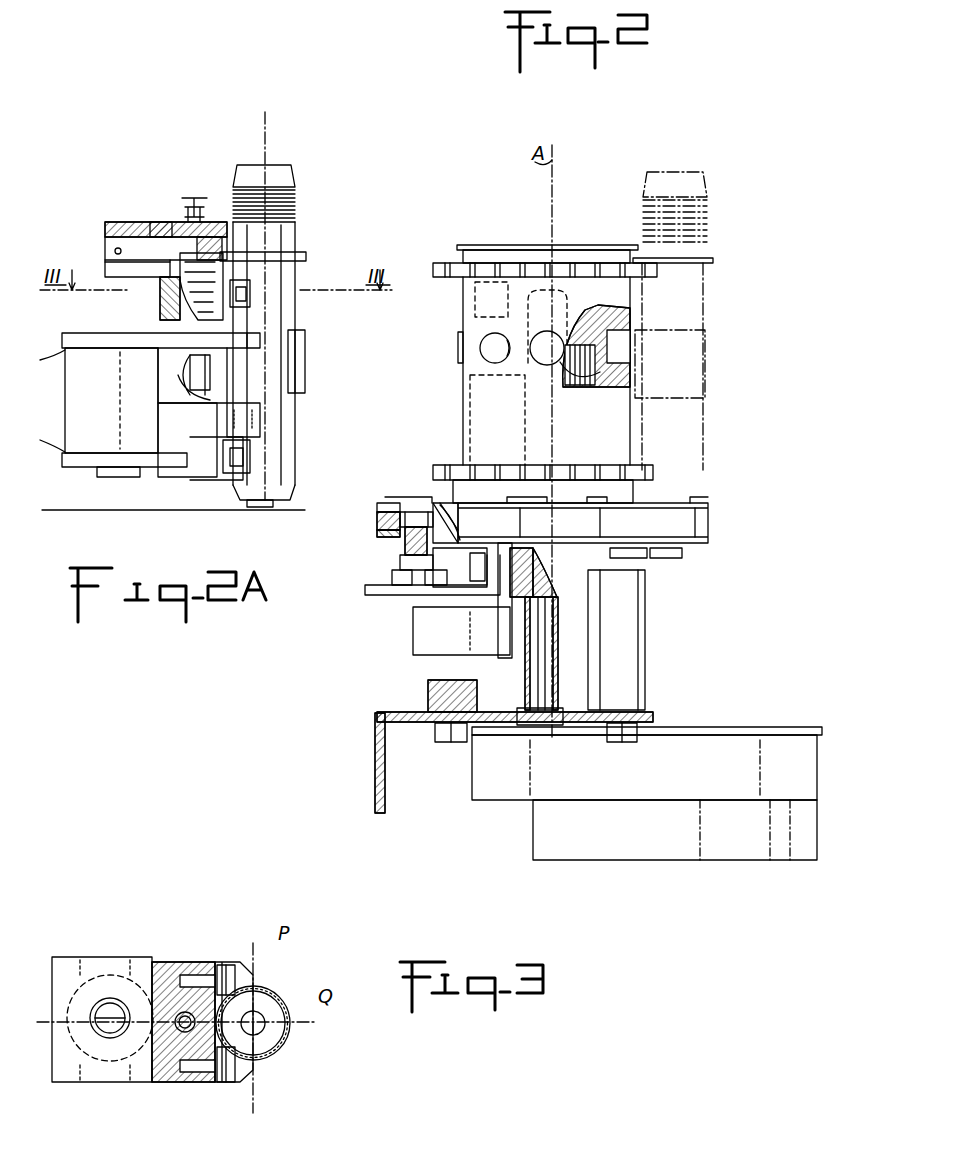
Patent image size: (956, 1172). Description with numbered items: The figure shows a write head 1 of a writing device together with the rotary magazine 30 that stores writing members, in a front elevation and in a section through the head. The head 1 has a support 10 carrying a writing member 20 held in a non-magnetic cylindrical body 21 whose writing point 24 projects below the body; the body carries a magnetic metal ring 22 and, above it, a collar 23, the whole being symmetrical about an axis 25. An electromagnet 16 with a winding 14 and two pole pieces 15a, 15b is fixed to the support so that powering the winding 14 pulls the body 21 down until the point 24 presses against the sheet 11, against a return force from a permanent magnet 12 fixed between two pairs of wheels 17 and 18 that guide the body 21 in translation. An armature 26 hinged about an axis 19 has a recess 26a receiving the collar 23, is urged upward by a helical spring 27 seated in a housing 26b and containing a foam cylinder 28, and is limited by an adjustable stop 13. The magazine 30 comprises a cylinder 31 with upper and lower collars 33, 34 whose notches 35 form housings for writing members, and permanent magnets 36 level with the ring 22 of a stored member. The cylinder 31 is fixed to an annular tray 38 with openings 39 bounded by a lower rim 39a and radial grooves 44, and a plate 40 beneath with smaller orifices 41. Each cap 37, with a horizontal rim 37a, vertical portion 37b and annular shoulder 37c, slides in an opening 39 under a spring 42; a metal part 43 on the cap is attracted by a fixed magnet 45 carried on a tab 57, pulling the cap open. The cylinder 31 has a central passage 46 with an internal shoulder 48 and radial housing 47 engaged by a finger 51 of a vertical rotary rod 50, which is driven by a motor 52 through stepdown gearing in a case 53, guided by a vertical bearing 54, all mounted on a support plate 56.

In FIG. 2A, the write head 1 is at (215, 139).
In FIG. 2A, the support 10 is at (116, 222).
In FIG. 3, the support 10 is at (172, 962).
In FIG. 2A, the sheet 11 is at (75, 510).
In FIG. 2A, the permanent magnet 12 is at (210, 374).
In FIG. 3, the permanent magnet 12 is at (185, 1082).
In FIG. 2A, the adjustable stop 13 is at (190, 200).
In FIG. 2A, the winding 14 is at (72, 415).
In FIG. 2A, the pole piece 15a is at (262, 343).
In FIG. 3, the pole piece 15a is at (243, 965).
In FIG. 2A, the pole piece 15b is at (258, 425).
In FIG. 2A, the electromagnet 16 is at (135, 480).
In FIG. 3, the electromagnet 16 is at (114, 1098).
In FIG. 2A, the wheels 17 is at (250, 296).
In FIG. 3, the wheels 17 is at (226, 965).
In FIG. 2A, the wheels 18 is at (230, 466).
In FIG. 2A, the axis 19 is at (115, 250).
In FIG. 2A, the writing member 20 is at (243, 490).
In FIG. 2A, the cylindrical body 21 is at (290, 284).
In FIG. 3, the cylindrical body 21 is at (288, 1047).
In FIG. 2A, the metal ring 22 is at (290, 380).
In FIG. 3, the metal ring 22 is at (283, 1000).
In FIG. 2A, the collar 23 is at (298, 253).
In FIG. 2A, the writing point 24 is at (258, 508).
In FIG. 2A, the axis 25 is at (270, 140).
In FIG. 2A, the armature 26 is at (105, 263).
In FIG. 2A, the recess 26a is at (205, 242).
In FIG. 2A, the housing 26b is at (165, 224).
In FIG. 2A, the spring 27 is at (163, 280).
In FIG. 3, the spring 27 is at (150, 1003).
In FIG. 2A, the cylinder 28 is at (203, 308).
In FIG. 3, the cylinder 28 is at (172, 1027).
In FIG. 2, the rotary magazine 30 is at (485, 214).
In FIG. 2, the support part 31 is at (566, 250).
In FIG. 2, the upper collar 33 is at (650, 276).
In FIG. 2, the lower collar 34 is at (648, 470).
In FIG. 2, the notches 35 is at (537, 265).
In FIG. 2, the permanent magnets 36 is at (617, 352).
In FIG. 2, the cap 37 is at (405, 560).
In FIG. 2, the horizontal rim 37a is at (428, 508).
In FIG. 2, the vertical portion 37b is at (377, 519).
In FIG. 2, the annular shoulder 37c is at (380, 538).
In FIG. 2, the annular tray 38 is at (710, 526).
In FIG. 2, the openings 39 is at (460, 514).
In FIG. 2, the lower rim 39a is at (398, 500).
In FIG. 2, the plate 40 is at (690, 560).
In FIG. 2, the orifices 41 is at (435, 558).
In FIG. 2, the spring 42 is at (435, 522).
In FIG. 2, the metal part 43 is at (372, 592).
In FIG. 2, the radial groove 44 is at (380, 505).
In FIG. 2, the magnet 45 is at (415, 588).
In FIG. 2, the central passage 46 is at (467, 380).
In FIG. 2, the radial housing 47 is at (592, 356).
In FIG. 2, the internal shoulder 48 is at (625, 398).
In FIG. 2, the rotary rod 50 is at (520, 383).
In FIG. 2, the finger 51 is at (574, 388).
In FIG. 2, the motor 52 is at (548, 820).
In FIG. 2, the case 53 is at (715, 740).
In FIG. 2, the vertical bearing 54 is at (540, 575).
In FIG. 2, the support plate 56 is at (490, 712).
In FIG. 2, the tab 57 is at (465, 600).